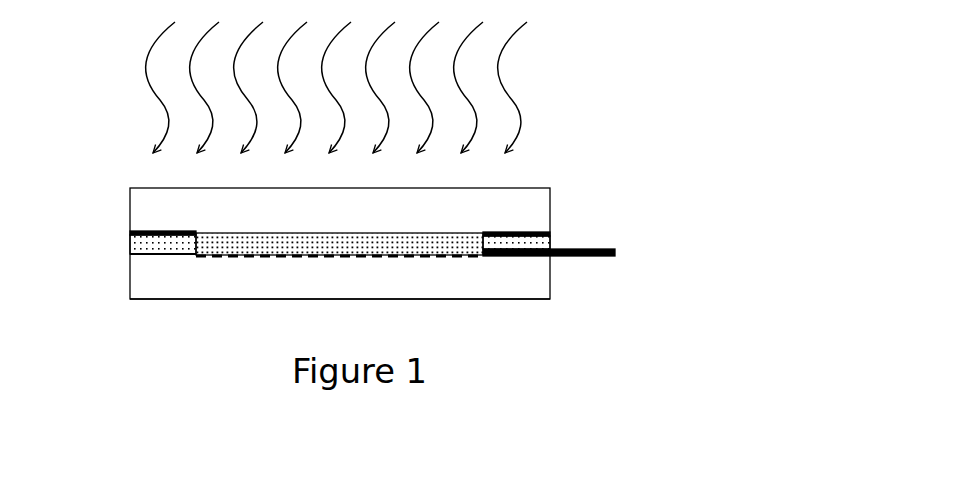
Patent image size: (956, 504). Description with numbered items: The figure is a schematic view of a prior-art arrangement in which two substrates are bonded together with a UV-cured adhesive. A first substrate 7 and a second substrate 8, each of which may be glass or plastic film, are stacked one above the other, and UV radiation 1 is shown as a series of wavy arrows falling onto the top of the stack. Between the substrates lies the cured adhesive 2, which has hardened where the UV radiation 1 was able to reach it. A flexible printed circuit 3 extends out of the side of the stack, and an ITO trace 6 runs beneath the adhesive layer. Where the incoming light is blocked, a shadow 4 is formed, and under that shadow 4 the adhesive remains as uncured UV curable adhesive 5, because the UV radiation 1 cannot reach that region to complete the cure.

The UV radiation 1 is at (507, 88).
The cured adhesive 2 is at (450, 243).
The flexible printed circuit (FPC) 3 is at (588, 249).
The shadow 4 is at (160, 231).
The uncured UV curable adhesive 5 is at (152, 242).
The ITO trace 6 is at (227, 255).
The first substrate 7 is at (527, 212).
The second substrate 8 is at (515, 287).